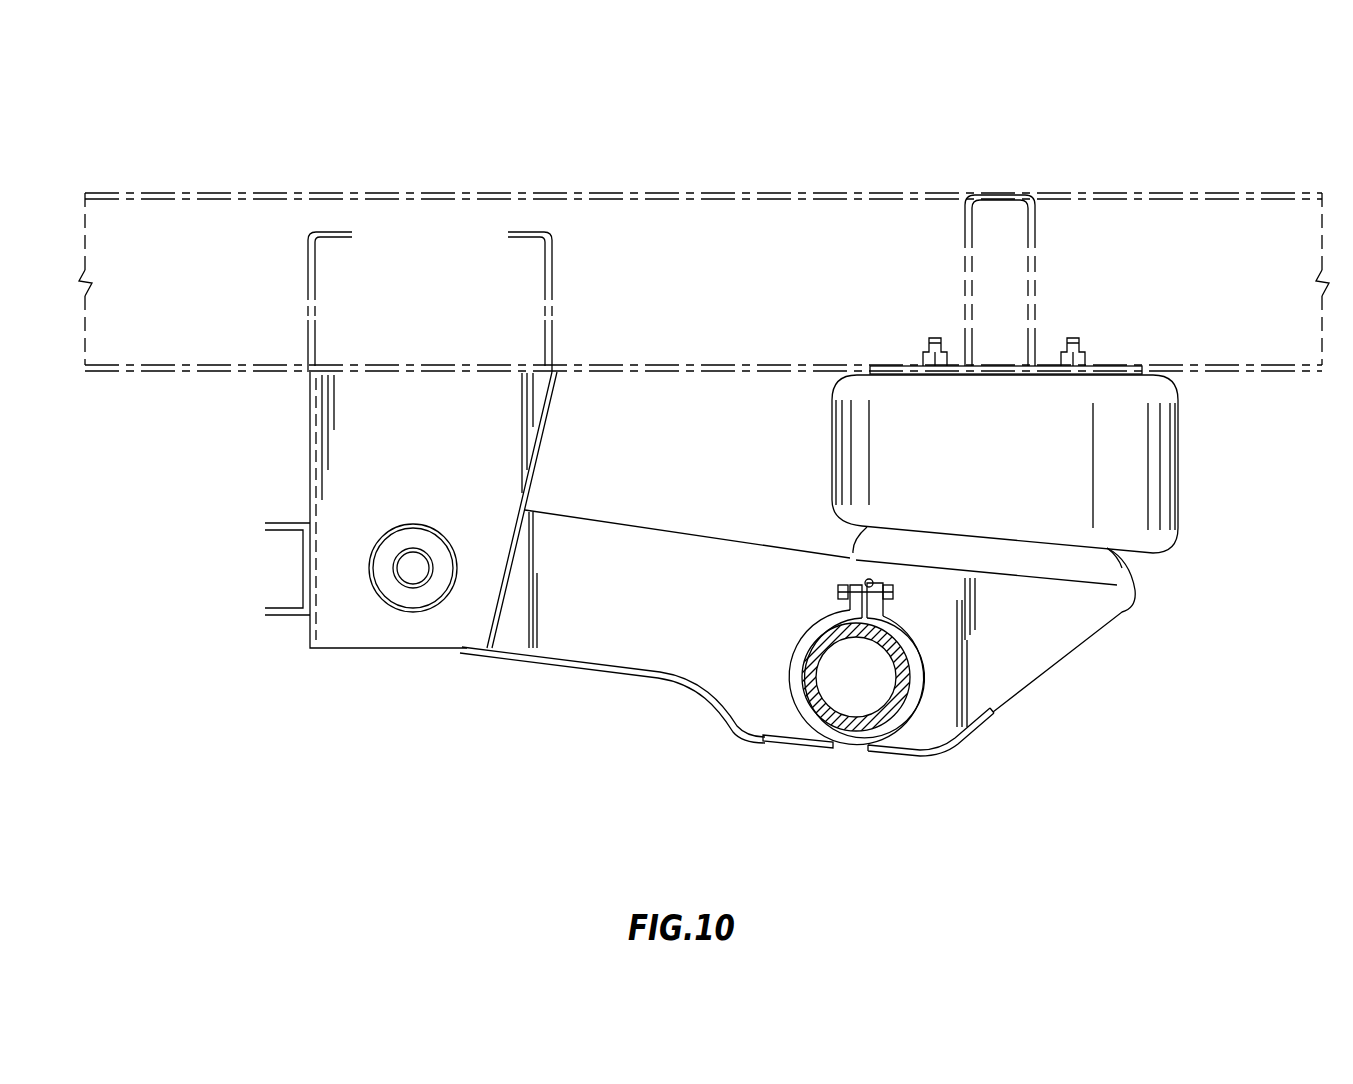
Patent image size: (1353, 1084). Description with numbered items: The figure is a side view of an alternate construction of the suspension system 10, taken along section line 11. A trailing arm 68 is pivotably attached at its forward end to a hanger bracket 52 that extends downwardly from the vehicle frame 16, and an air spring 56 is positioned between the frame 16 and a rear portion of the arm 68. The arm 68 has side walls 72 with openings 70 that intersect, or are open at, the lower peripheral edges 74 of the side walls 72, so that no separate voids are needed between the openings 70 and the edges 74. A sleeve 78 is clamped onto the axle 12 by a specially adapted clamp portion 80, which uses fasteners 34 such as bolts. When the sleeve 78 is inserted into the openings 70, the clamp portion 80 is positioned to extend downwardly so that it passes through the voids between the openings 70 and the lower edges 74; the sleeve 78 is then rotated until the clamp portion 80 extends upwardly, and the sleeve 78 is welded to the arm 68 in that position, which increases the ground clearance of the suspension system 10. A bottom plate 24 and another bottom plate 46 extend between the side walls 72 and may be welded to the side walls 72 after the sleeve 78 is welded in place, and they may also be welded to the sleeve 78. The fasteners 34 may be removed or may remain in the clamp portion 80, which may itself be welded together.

The suspension system 10 is at (1123, 150).
The section line 11- 11 is at (940, 565).
The axle 12 is at (913, 668).
The vehicle frame 16 is at (553, 193).
The bottom plate 24 is at (570, 667).
The fasteners 34 is at (893, 592).
The bottom plate 46 is at (960, 737).
The hanger bracket 52 is at (308, 437).
The air spring 56 is at (1180, 455).
The arm 68 is at (1098, 648).
The openings 70 is at (895, 730).
The side walls 72 is at (688, 633).
The lower peripheral edges 74 is at (763, 737).
The sleeve 78 is at (783, 695).
The clamp portion 80 is at (883, 583).